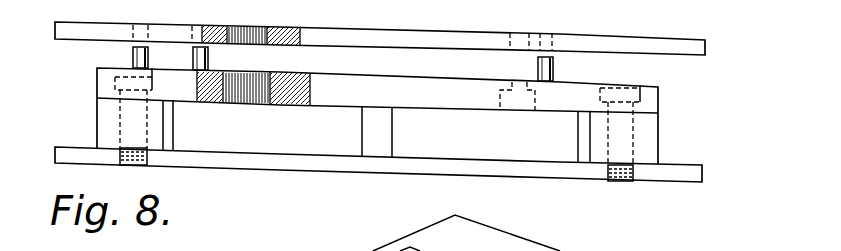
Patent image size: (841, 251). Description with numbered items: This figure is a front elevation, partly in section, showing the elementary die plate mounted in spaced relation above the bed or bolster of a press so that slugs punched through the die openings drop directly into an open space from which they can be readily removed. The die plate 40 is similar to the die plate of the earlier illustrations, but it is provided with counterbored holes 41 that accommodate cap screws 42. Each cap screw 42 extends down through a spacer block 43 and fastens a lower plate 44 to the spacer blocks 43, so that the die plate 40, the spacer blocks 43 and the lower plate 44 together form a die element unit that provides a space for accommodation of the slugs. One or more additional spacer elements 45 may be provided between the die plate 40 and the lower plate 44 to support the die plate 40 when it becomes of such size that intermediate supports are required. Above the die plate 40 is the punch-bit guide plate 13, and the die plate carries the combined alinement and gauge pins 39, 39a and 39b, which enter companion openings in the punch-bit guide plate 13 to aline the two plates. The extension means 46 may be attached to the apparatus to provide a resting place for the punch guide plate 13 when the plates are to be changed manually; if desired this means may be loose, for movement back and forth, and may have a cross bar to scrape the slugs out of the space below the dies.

The punch-bit guide plate 13 is at (705, 47).
The combined alinement and gauge pin 39 is at (148, 57).
The combined alinement and gauge pin 39a is at (208, 58).
The combined alinement and gauge pin 39b is at (553, 67).
The die plate 40 is at (658, 98).
The counterbored hole 41 is at (123, 77).
The cap screw 42 is at (145, 123).
The spacer block 43 is at (120, 153).
The lower plate 44 is at (677, 177).
The additional spacer element 45 is at (393, 133).
The extension means 46 is at (173, 123).